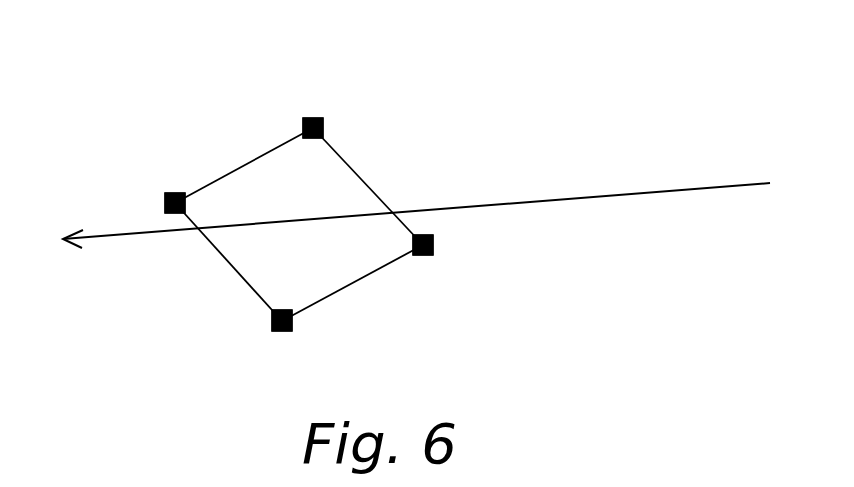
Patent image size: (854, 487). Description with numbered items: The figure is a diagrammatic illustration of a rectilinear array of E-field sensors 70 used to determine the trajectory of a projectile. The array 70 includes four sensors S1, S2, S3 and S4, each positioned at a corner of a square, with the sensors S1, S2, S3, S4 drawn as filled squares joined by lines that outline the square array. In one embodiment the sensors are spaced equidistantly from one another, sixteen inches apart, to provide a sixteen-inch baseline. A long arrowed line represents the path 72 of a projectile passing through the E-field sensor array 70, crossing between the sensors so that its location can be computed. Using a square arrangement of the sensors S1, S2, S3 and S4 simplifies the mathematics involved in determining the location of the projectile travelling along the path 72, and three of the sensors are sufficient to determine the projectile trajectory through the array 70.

The E-field sensor array 70 is at (323, 128).
The path 72 is at (561, 199).
The sensor S1 is at (442, 246).
The sensor S2 is at (314, 112).
The sensor S3 is at (156, 204).
The sensor S4 is at (280, 337).